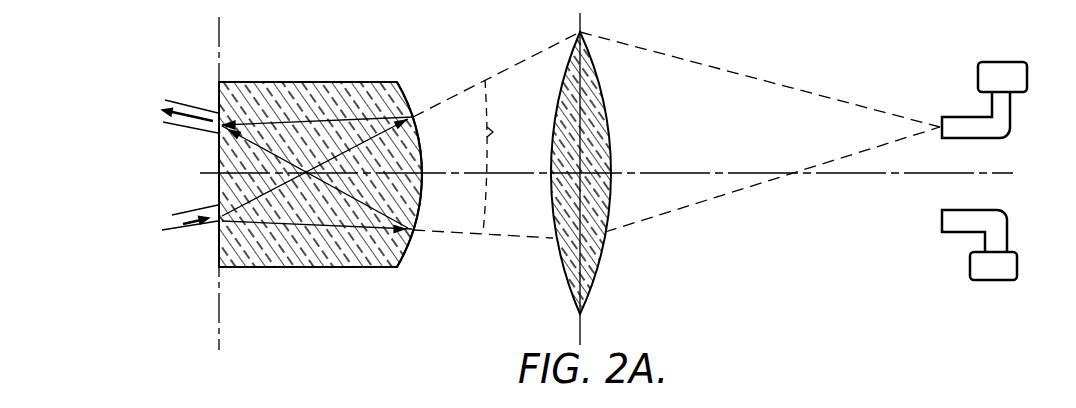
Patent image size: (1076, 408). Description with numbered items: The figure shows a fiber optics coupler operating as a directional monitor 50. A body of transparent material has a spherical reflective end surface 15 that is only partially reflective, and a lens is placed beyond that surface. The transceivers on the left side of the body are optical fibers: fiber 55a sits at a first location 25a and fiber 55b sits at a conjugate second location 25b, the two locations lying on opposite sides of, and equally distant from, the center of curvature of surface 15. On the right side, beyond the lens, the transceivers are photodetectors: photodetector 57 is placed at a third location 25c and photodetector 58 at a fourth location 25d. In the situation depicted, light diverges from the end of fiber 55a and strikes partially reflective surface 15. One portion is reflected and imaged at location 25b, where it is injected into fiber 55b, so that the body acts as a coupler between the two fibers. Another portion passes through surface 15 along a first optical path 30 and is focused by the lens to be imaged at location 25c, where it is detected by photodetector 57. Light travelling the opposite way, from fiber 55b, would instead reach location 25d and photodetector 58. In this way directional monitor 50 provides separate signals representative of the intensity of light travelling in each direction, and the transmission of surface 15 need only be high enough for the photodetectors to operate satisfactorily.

The spherical reflective end surface 15 is at (407, 98).
The first location 25a is at (223, 219).
The second location 25b is at (222, 124).
The third location 25c is at (940, 121).
The fourth location 25d is at (940, 218).
The first optical path 30 is at (503, 156).
The directional monitor 50 is at (440, 307).
The fiber 55a is at (198, 235).
The fiber 55b is at (191, 132).
The photodetector 57 is at (1016, 62).
The photodetector 58 is at (1007, 282).